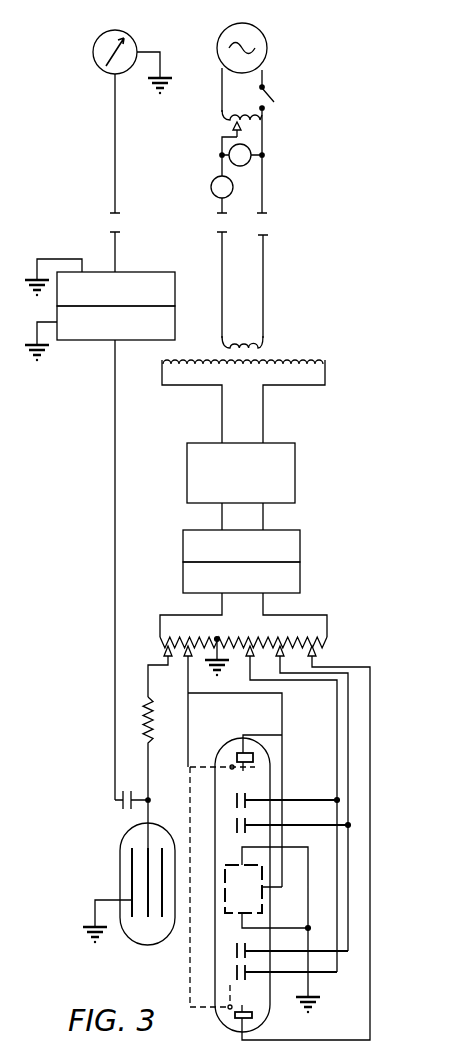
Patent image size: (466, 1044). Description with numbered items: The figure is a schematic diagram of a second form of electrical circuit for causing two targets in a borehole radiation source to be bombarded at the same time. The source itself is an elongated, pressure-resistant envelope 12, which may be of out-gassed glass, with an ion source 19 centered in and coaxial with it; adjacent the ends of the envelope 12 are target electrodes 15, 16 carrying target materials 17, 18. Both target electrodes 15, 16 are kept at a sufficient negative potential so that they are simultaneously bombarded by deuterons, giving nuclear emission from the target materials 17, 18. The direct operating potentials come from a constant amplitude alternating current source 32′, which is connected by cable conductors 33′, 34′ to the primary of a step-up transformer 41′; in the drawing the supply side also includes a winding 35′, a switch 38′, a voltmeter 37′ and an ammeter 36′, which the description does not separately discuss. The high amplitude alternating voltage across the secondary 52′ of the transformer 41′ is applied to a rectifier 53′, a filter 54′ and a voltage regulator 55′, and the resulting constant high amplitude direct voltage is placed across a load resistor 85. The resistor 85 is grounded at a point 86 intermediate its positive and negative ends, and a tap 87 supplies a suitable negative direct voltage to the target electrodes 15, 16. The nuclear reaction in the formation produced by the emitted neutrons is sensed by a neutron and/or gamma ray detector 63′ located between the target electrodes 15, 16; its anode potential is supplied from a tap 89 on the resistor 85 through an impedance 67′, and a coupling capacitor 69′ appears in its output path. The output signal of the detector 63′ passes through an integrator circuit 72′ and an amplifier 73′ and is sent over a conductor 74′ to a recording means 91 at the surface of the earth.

The recording means 91 is at (134, 44).
The constant amplitude alternating current source 32′ is at (266, 44).
The variable autotransformer 35′ is at (242, 130).
The switch 38′ is at (271, 100).
The voltmeter 37′ is at (252, 152).
The ammeter 36′ is at (211, 189).
The conductor 74′ is at (116, 250).
The amplifier 73′ is at (176, 292).
The integrator circuit 72′ is at (175, 325).
The cable conductor 33′ is at (223, 297).
The cable conductor 34′ is at (264, 298).
The step-up transformer 41′ is at (270, 347).
The secondary 52′ is at (230, 368).
The rectifier 53′ is at (296, 494).
The filter 54′ is at (301, 550).
The voltage regulator 55′ is at (301, 583).
The load resistor 85 is at (292, 638).
The ground point 86 is at (228, 641).
The tap 89 is at (164, 653).
The tap 87 is at (316, 661).
The impedance 67′ is at (151, 736).
The coupling capacitor 69′ is at (123, 804).
The neutron and/or gamma ray detector 63′ is at (161, 826).
The envelope 12 is at (218, 766).
The target electrode 15 is at (249, 743).
The target material 17 is at (242, 771).
The ion source 19 is at (272, 930).
The target material 18 is at (245, 998).
The target electrode 16 is at (253, 1016).